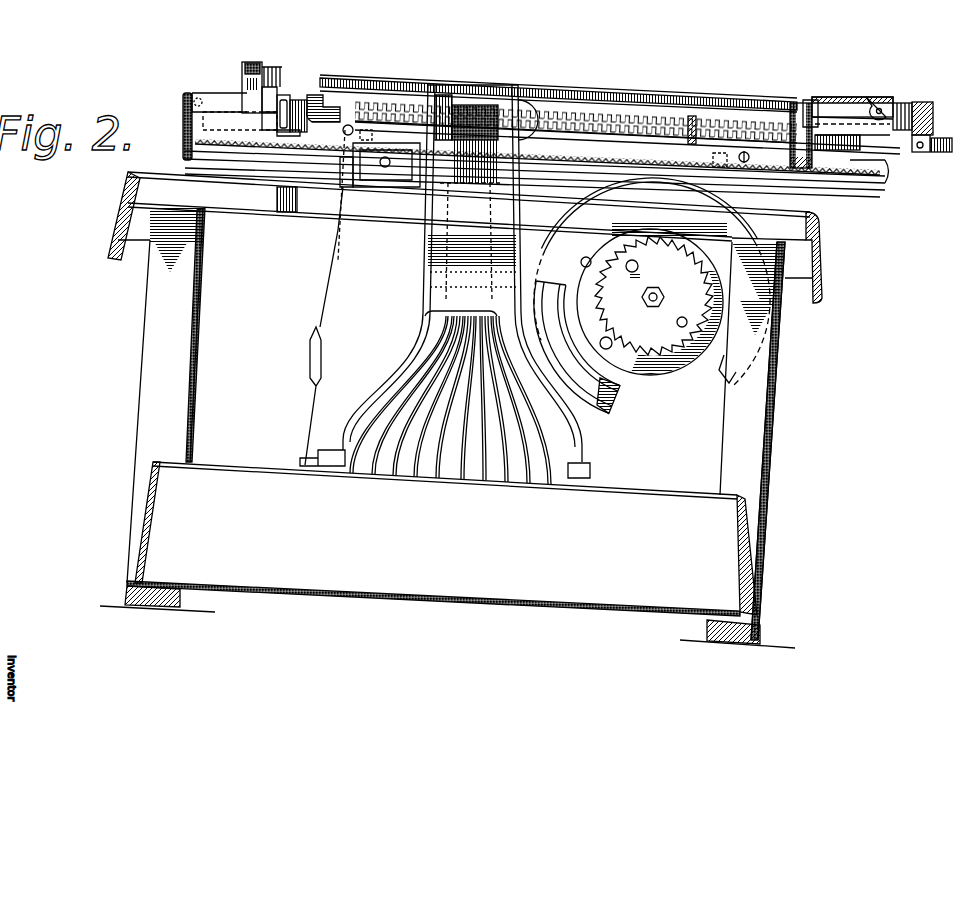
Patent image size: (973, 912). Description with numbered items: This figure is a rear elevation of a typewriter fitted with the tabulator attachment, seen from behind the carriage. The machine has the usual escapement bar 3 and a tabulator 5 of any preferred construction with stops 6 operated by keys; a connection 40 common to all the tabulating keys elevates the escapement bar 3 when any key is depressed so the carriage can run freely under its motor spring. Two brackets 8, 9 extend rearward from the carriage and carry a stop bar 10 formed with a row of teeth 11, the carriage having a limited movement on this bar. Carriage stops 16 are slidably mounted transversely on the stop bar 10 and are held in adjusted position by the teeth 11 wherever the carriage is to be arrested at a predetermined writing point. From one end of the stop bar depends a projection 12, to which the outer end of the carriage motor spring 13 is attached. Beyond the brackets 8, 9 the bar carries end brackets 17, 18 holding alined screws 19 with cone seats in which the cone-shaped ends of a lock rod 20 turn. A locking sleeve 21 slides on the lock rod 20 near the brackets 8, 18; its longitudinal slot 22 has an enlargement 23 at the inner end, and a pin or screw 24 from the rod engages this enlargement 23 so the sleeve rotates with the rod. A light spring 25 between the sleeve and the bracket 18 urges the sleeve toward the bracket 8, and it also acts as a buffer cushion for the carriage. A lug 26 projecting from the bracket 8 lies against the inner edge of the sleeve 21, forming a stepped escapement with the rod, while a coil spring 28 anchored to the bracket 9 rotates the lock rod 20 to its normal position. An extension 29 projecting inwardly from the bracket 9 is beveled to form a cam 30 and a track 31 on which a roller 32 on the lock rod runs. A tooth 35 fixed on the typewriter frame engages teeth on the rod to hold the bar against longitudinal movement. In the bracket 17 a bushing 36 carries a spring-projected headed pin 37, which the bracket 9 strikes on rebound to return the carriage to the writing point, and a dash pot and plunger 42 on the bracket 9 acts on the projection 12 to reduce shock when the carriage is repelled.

The escapement bar 3 is at (572, 140).
The tabulator 5 is at (520, 105).
The stops 6 is at (497, 98).
The bracket 8 is at (814, 158).
The bracket 9 is at (338, 108).
The stop bar 10 is at (387, 105).
The teeth 11 is at (448, 108).
The projection 12 is at (190, 120).
The carriage motor spring 13 is at (279, 203).
The carriage stops 16 is at (405, 103).
The bracket 17 is at (256, 70).
The bracket 18 is at (932, 105).
The alined screws 19 is at (246, 72).
The lock rod 20 is at (740, 105).
The locking sleeve 21 is at (226, 93).
The longitudinal slot 22 is at (823, 102).
The enlargement 23 is at (888, 100).
The pin or screw 24 is at (910, 104).
The light spring 25 is at (907, 131).
The lug 26 is at (808, 118).
The coil spring 28 is at (281, 86).
The extension 29 is at (300, 95).
The cam 30 is at (305, 141).
The track 31 is at (312, 99).
The roller 32 is at (370, 92).
The tooth 35 is at (427, 107).
The bushing 36 is at (270, 118).
The headed pin 37 is at (290, 133).
The connection 40 is at (378, 180).
The dash pot and plunger 42 is at (187, 93).